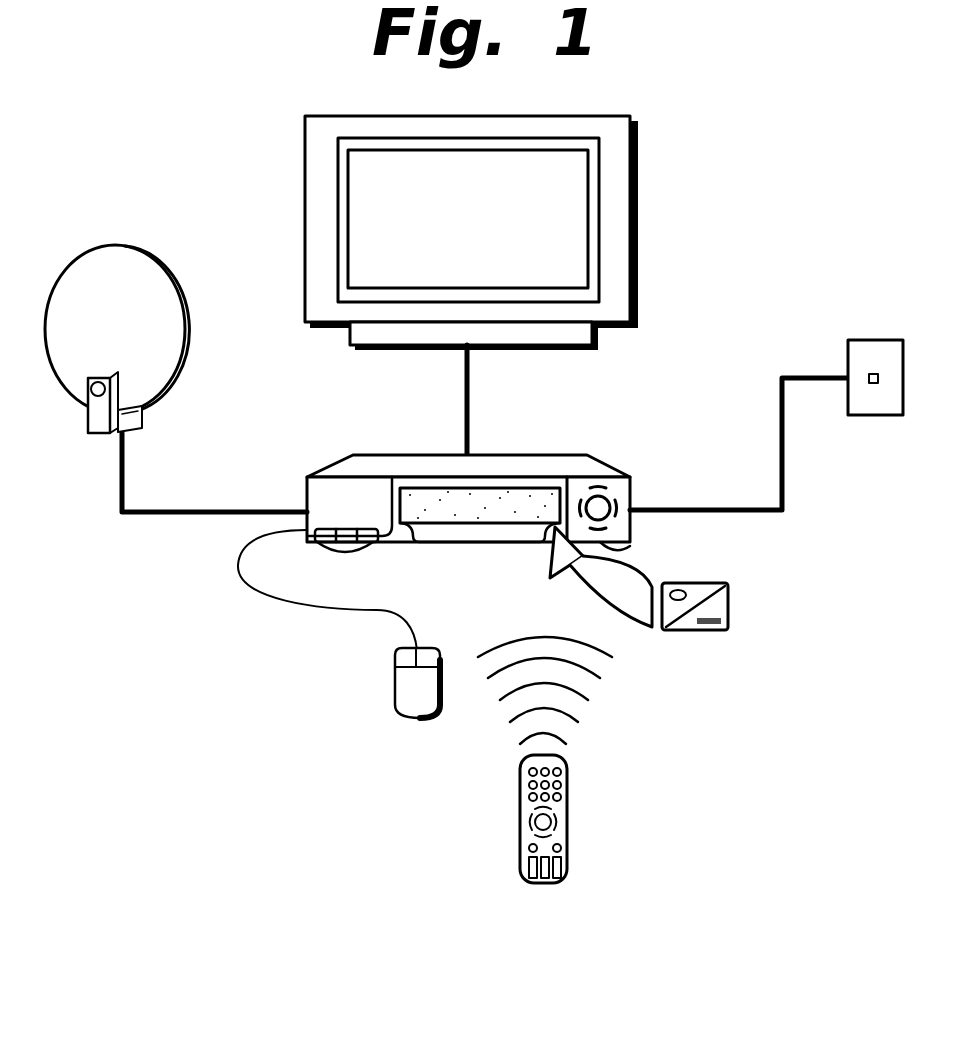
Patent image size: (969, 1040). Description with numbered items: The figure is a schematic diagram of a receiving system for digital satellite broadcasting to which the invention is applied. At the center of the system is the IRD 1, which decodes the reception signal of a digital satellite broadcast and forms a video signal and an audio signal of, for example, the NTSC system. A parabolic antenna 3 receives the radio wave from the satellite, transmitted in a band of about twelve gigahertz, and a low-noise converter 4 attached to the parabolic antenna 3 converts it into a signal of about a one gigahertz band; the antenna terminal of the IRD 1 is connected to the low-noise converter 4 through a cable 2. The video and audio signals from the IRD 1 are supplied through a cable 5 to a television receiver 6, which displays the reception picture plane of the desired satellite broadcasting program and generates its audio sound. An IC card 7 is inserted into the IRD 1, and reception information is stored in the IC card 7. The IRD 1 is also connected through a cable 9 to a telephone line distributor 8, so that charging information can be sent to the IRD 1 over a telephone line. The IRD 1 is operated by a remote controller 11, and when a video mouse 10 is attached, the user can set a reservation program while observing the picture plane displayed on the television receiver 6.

The IRD 1 is at (614, 468).
The cable 2 is at (232, 502).
The parabolic antenna 3 is at (152, 256).
The low-noise converter 4 is at (98, 393).
The cable 5 is at (466, 402).
The television receiver 6 is at (640, 198).
The IC card 7 is at (730, 605).
The telephone line distributor 8 is at (882, 340).
The cable 9 is at (720, 508).
The video mouse 10 is at (392, 683).
The remote controller 11 is at (568, 808).